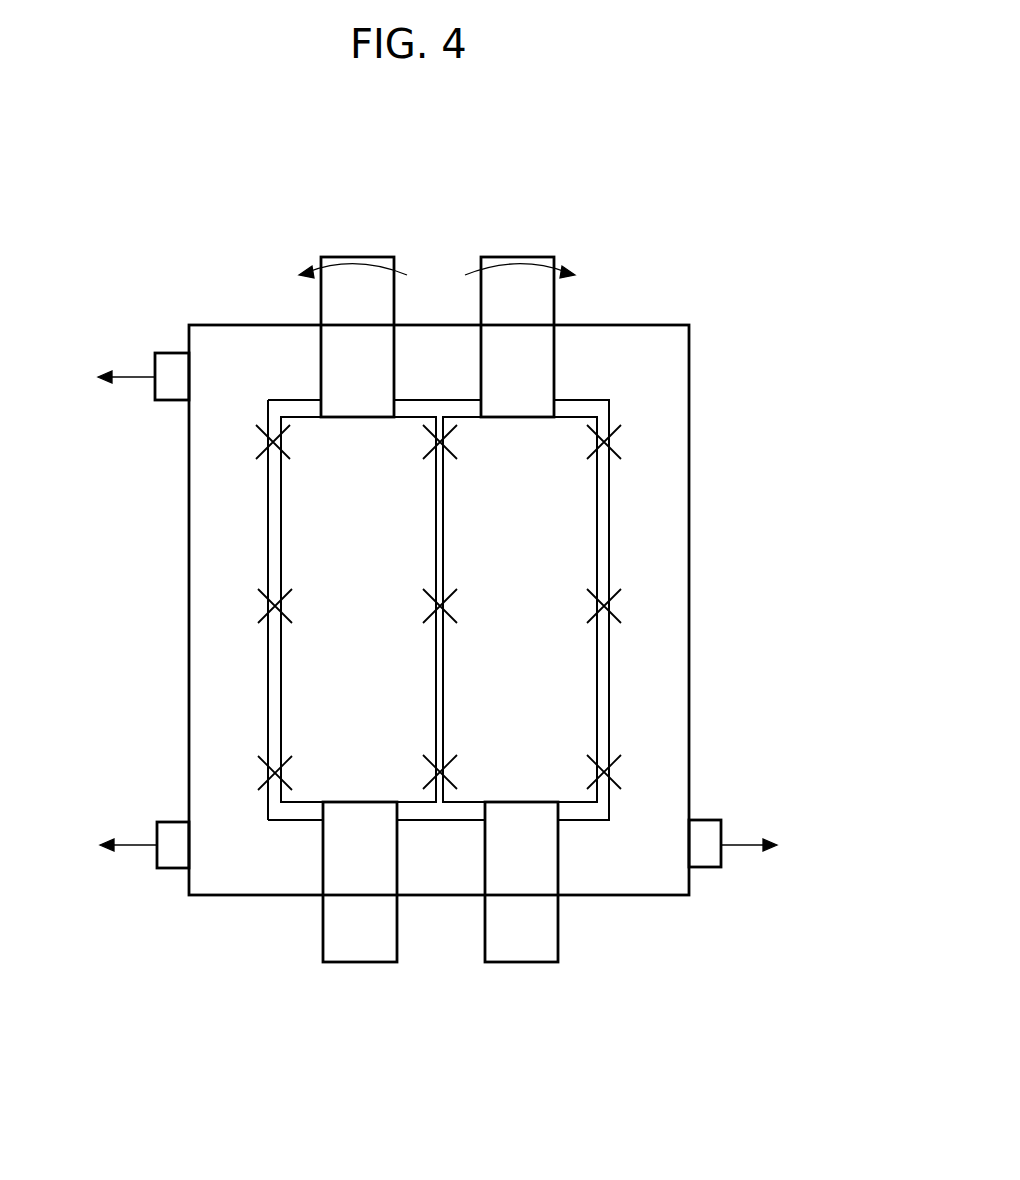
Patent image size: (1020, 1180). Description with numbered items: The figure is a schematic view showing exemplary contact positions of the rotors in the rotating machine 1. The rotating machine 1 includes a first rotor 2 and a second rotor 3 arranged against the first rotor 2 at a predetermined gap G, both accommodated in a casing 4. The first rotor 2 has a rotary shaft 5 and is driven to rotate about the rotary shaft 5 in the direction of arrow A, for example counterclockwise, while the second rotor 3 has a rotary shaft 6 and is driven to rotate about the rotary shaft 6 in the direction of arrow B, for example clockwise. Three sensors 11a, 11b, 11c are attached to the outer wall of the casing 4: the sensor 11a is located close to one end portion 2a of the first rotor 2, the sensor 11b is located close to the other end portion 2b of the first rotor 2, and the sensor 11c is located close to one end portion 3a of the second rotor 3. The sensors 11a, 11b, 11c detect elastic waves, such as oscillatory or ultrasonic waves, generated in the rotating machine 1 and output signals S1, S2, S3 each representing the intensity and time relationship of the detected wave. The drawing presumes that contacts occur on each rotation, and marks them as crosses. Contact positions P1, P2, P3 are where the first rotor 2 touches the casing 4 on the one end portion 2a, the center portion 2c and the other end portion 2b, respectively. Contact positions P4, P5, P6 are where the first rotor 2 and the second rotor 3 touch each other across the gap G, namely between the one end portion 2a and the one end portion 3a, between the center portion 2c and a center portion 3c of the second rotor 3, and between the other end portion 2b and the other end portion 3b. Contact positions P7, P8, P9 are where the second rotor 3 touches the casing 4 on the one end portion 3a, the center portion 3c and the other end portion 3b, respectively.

The rotating machine 1 is at (733, 175).
The first rotor 2 is at (298, 528).
The one end portion of the first rotor 2a is at (360, 782).
The other end portion of the first rotor 2b is at (355, 442).
The center portion of the first rotor 2c is at (350, 615).
The second rotor 3 is at (582, 528).
The one end portion of the second rotor 3a is at (522, 783).
The other end portion of the second rotor 3b is at (525, 443).
The center portion of the second rotor 3c is at (525, 618).
The casing 4 is at (665, 401).
The rotary shaft 5 is at (321, 284).
The rotary shaft 6 is at (554, 287).
The sensor 11a is at (175, 870).
The sensor 11b is at (170, 352).
The sensor 11c is at (703, 870).
The arrow indicating rotation direction of the first rotor A is at (352, 257).
The arrow indicating rotation direction of the second rotor B is at (517, 257).
The gap G is at (437, 392).
The contact position P1 is at (258, 773).
The contact position P2 is at (258, 605).
The contact position P3 is at (258, 437).
The contact position P4 is at (453, 787).
The contact position P5 is at (452, 617).
The contact position P6 is at (446, 455).
The contact position P7 is at (617, 770).
The contact position P8 is at (618, 603).
The contact position P9 is at (618, 437).
The signal S1 is at (111, 842).
The signal S2 is at (109, 377).
The signal S3 is at (770, 845).